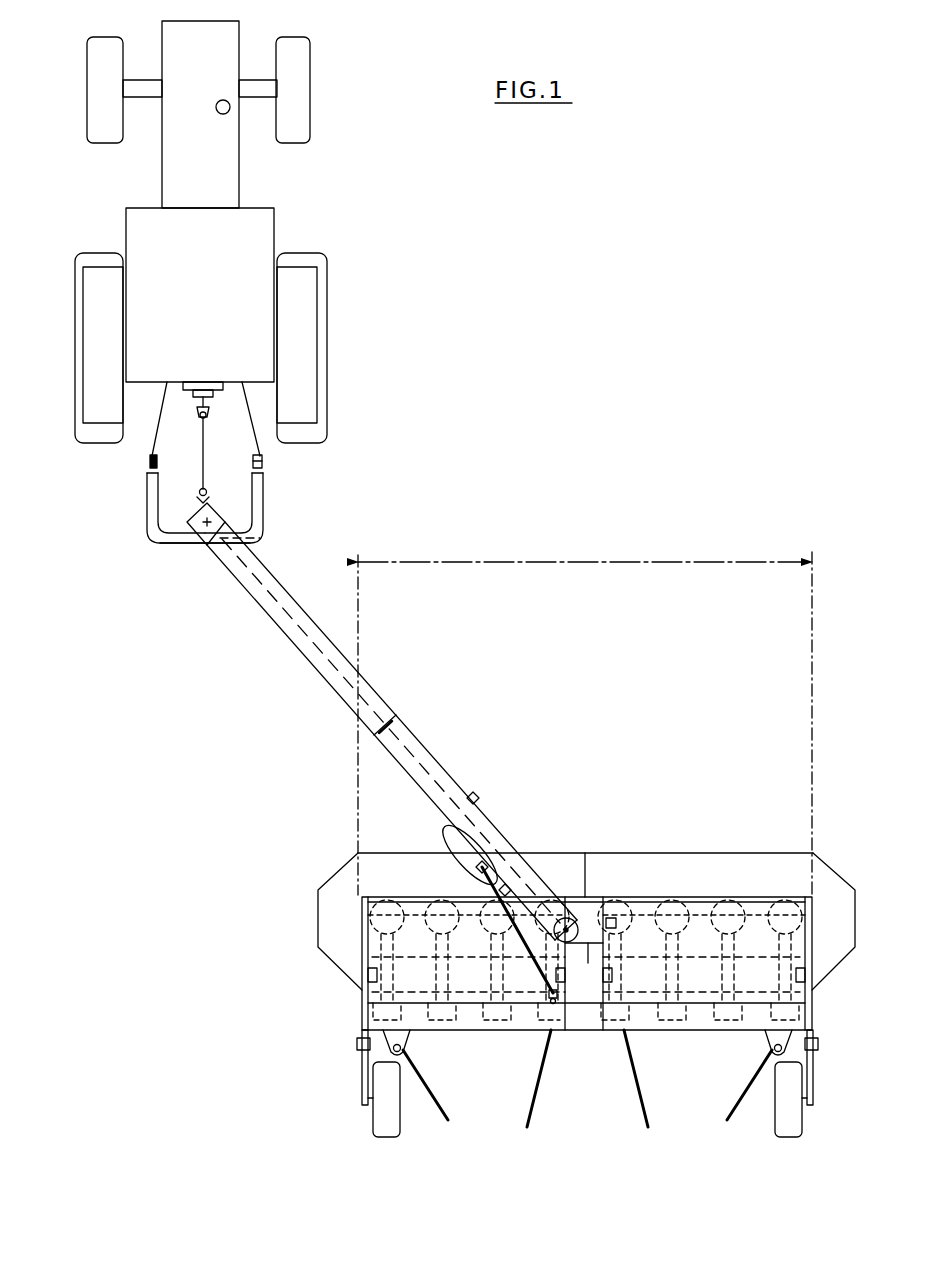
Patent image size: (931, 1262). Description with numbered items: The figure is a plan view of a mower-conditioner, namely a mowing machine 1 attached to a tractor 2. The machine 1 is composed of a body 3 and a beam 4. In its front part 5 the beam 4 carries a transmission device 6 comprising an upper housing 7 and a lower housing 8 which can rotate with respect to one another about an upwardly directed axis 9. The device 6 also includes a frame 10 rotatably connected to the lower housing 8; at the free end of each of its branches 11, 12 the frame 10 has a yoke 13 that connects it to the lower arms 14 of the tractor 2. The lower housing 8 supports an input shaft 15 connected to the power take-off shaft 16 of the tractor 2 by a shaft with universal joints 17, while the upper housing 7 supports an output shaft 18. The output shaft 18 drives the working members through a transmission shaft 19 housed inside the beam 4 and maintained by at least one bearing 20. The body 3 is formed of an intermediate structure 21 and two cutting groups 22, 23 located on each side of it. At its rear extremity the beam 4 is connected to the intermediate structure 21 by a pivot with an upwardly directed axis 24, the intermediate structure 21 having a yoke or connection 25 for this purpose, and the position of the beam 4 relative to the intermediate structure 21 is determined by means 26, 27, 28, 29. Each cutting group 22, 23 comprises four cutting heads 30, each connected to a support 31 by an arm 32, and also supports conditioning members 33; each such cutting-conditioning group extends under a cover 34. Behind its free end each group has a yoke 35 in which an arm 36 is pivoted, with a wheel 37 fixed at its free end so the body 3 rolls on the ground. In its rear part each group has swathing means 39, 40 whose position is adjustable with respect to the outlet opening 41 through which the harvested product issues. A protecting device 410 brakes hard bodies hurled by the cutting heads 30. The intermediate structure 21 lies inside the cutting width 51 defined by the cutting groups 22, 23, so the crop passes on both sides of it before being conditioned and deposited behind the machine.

The mowing machine 1 is at (466, 598).
The tractor 2 is at (252, 232).
The body 3 is at (559, 946).
The beam 4 is at (390, 731).
The front part 5 is at (327, 538).
The transmission device 6 is at (193, 548).
The upper housing 7 is at (206, 540).
The lower housing 8 is at (220, 510).
The axis 9 is at (197, 530).
The frame 10 is at (157, 535).
The branch 11 is at (147, 507).
The branch 12 is at (263, 507).
The yoke 13 is at (150, 462).
The lower arms 14 is at (161, 407).
The input shaft 15 is at (200, 499).
The power take-off shaft 16 is at (193, 399).
The shaft with universal joints 17 is at (203, 442).
The output shaft 18 is at (260, 538).
The transmission shaft 19 is at (268, 610).
The bearing 20 is at (380, 727).
The intermediate structure 21 is at (583, 1033).
The cutting group 22 is at (672, 888).
The cutting group 23 is at (387, 885).
The pivot axis 24 is at (568, 919).
The yoke or connection 25 is at (584, 963).
The position-determining means 26 is at (490, 880).
The position-determining means 27 is at (458, 833).
The position-determining means 28 is at (553, 1007).
The position-determining means 29 is at (473, 792).
The cutting head 30 is at (375, 928).
The support 31 is at (415, 1025).
The arm 32 is at (387, 982).
The conditioning members 33 is at (408, 977).
The cover 34 is at (423, 988).
The yoke 35 is at (357, 1043).
The arm 36 is at (362, 1078).
The wheel 37 is at (383, 1120).
The swathing means 39 is at (427, 1093).
The swathing means 40 is at (637, 1092).
The outlet opening 41 is at (488, 1040).
The cutting width 51 is at (575, 558).
The protecting device 410 is at (753, 877).